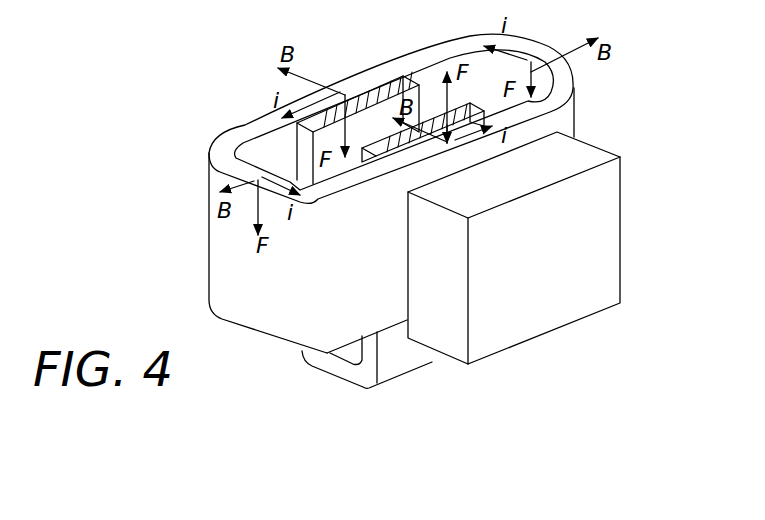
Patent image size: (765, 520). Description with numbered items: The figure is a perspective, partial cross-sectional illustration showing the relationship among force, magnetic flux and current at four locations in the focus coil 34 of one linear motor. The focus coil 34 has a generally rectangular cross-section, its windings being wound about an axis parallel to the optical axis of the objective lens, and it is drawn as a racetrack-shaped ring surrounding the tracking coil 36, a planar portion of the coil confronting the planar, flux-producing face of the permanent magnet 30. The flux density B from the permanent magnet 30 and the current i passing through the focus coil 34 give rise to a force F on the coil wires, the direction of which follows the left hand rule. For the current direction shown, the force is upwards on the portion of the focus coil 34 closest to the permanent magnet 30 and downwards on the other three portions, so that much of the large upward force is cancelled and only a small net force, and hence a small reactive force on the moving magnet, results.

The permanent magnet 30 is at (607, 268).
The focus coil 34 is at (443, 56).
The tracking coil 36 is at (337, 362).